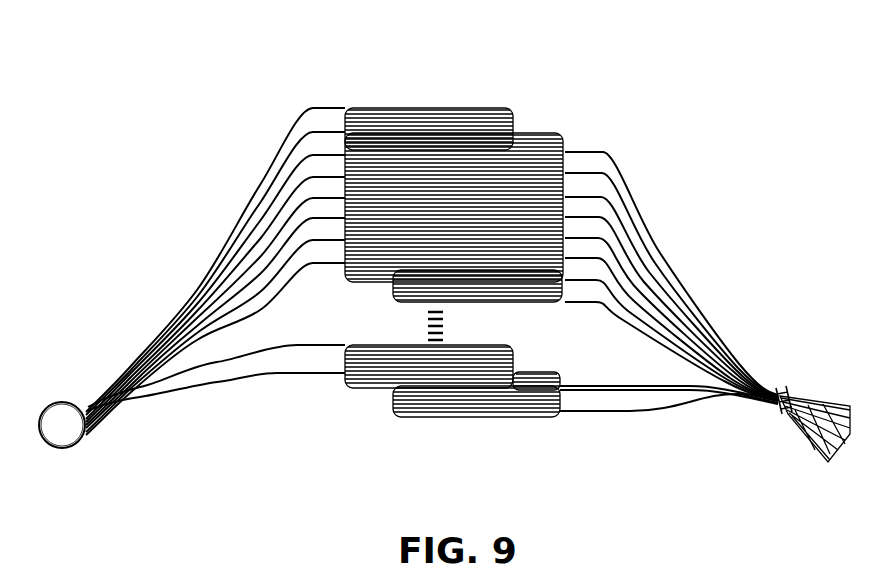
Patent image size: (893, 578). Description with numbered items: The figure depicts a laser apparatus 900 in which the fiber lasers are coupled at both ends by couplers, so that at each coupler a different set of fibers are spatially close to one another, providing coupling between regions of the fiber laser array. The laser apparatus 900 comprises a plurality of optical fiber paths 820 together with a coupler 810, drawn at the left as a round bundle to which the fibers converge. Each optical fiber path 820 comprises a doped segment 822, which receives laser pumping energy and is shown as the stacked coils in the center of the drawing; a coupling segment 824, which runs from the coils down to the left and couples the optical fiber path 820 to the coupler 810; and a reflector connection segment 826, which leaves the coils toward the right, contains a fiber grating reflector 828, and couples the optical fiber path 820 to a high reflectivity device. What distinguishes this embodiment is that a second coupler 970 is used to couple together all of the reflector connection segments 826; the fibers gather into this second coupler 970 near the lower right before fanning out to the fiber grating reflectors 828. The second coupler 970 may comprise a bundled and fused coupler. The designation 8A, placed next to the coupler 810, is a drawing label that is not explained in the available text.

The laser apparatus 900 is at (440, 23).
The doped segment 822 is at (443, 88).
The optical fiber paths 820 is at (572, 105).
The coupling segment 824 is at (214, 238).
The reflector connection segment 826 is at (667, 196).
The coupler 810 is at (84, 398).
The cable cross-section reference 8A is at (79, 444).
The fiber grating reflector 828 is at (846, 402).
The second coupler 970 is at (780, 418).